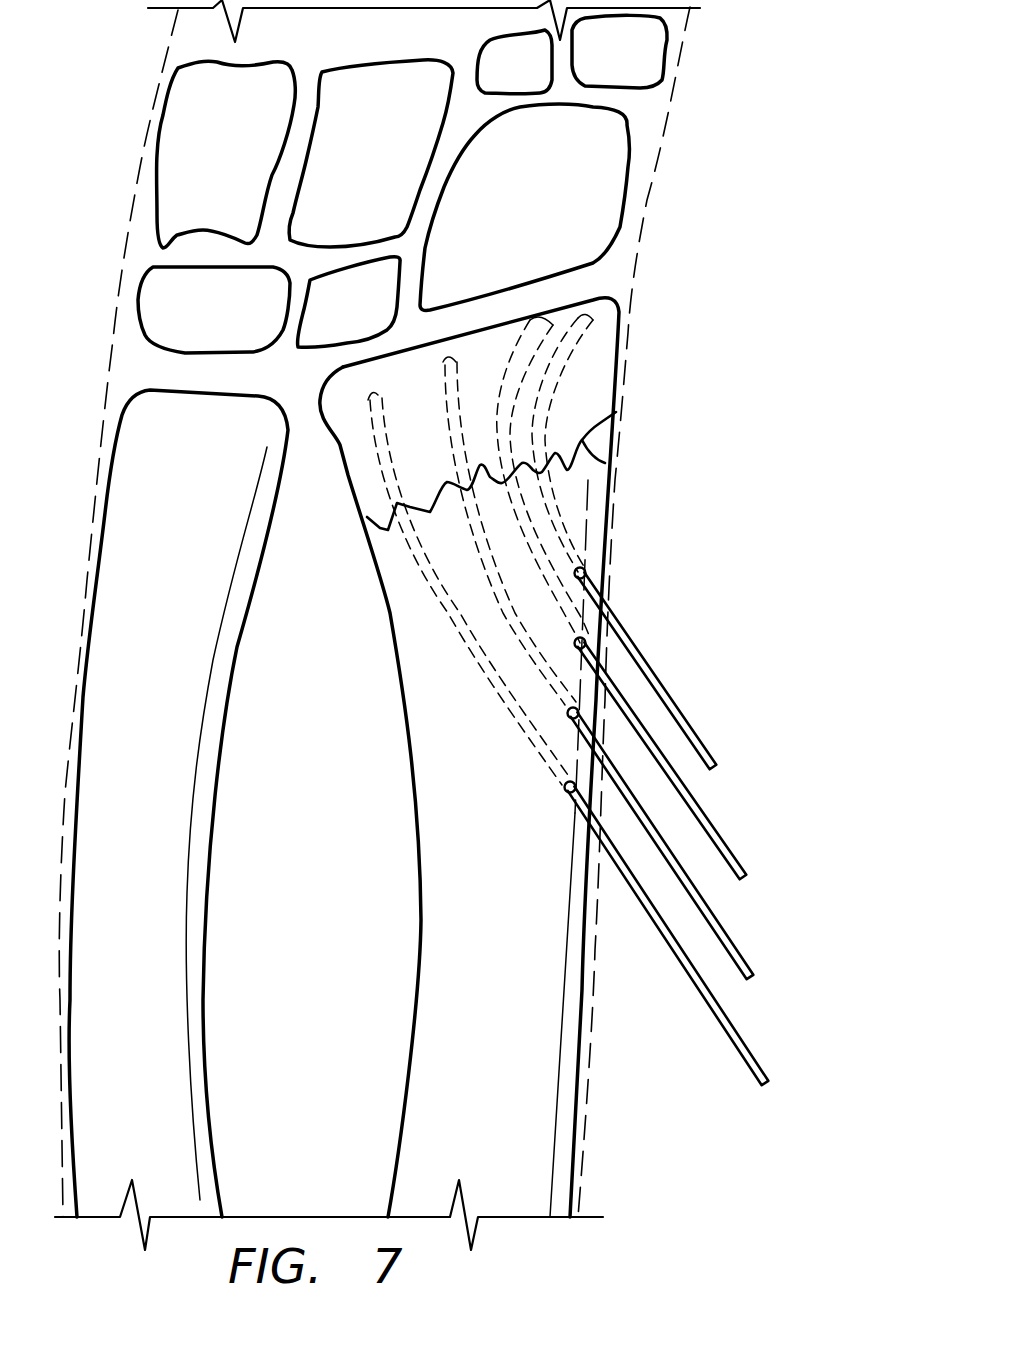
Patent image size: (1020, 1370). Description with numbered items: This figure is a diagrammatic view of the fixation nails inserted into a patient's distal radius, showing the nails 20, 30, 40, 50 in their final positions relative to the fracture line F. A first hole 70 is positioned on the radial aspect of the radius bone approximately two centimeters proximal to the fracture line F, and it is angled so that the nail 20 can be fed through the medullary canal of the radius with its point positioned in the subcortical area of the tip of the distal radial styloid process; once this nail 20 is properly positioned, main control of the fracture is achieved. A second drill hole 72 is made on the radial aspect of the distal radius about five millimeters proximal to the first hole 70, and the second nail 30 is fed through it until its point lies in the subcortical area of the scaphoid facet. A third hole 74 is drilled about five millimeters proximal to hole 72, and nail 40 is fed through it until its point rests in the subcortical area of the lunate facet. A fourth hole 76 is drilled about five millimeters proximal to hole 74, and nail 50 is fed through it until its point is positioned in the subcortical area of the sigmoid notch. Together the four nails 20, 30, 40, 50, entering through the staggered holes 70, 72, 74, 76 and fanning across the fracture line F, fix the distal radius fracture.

The fracture line F is at (616, 412).
The nail 20 is at (697, 727).
The second nail 30 is at (722, 830).
The nail 40 is at (745, 957).
The nail 50 is at (757, 1060).
The first hole 70 is at (587, 566).
The second drill hole 72 is at (587, 636).
The third hole 74 is at (566, 709).
The fourth hole 76 is at (563, 784).